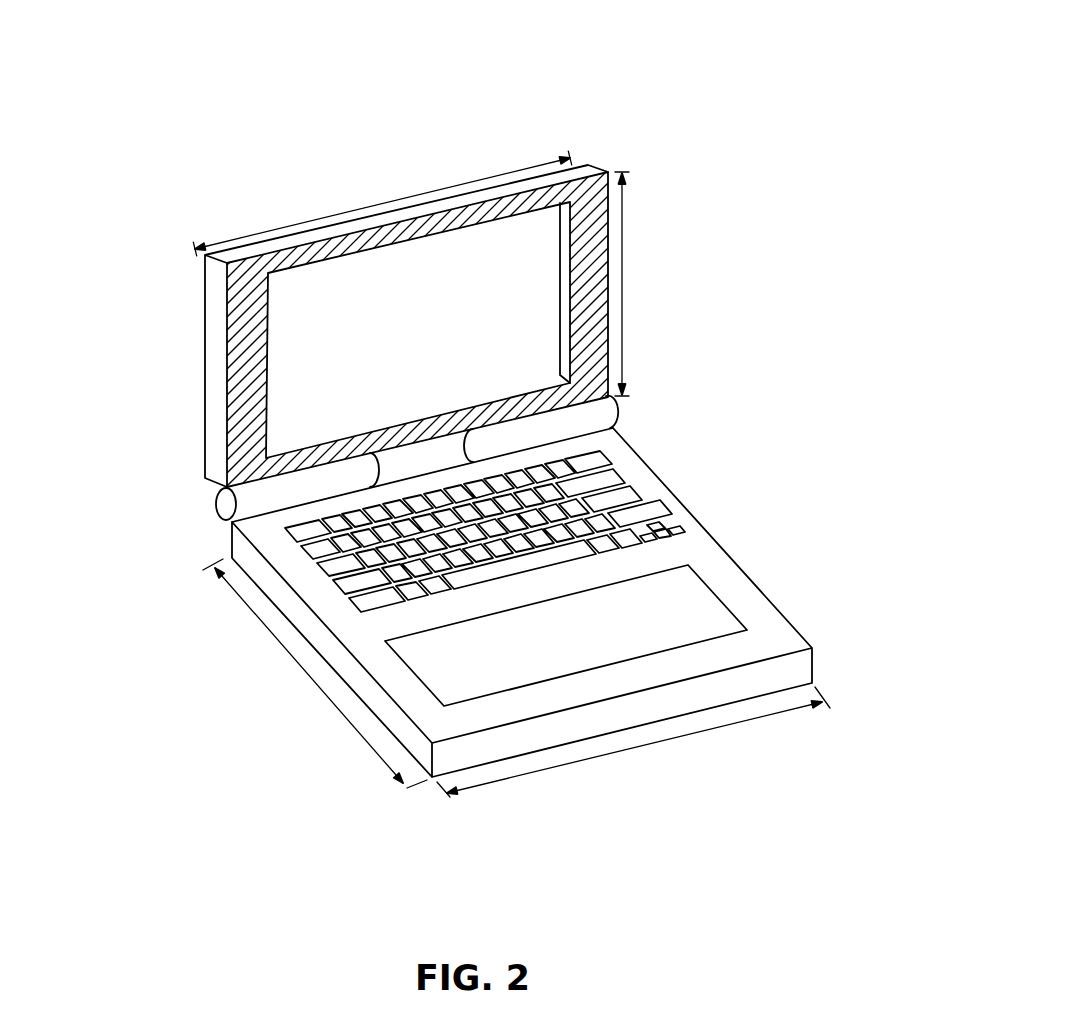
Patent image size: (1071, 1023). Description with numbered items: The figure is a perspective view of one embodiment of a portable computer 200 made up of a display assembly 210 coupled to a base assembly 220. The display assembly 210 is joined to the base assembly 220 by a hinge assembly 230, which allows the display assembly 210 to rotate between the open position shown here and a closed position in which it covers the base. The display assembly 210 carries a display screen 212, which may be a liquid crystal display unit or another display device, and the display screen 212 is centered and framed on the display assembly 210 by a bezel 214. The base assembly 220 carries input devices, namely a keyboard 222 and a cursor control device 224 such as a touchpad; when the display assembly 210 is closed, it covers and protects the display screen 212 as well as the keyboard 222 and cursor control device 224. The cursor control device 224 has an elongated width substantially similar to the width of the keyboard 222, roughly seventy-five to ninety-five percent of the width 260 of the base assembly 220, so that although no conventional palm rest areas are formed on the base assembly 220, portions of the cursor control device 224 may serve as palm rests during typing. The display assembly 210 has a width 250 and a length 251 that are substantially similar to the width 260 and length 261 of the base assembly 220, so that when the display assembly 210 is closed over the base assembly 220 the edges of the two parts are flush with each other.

The portable computer 200 is at (452, 430).
The display assembly 210 is at (419, 301).
The display screen 212 is at (430, 336).
The bezel 214 is at (247, 284).
The base assembly 220 is at (554, 615).
The keyboard 222 is at (603, 497).
The cursor control device 224 is at (678, 610).
The hinge assembly 230 is at (250, 500).
The width 250 is at (402, 207).
The length 251 is at (623, 281).
The width 260 is at (646, 745).
The length 261 is at (294, 657).